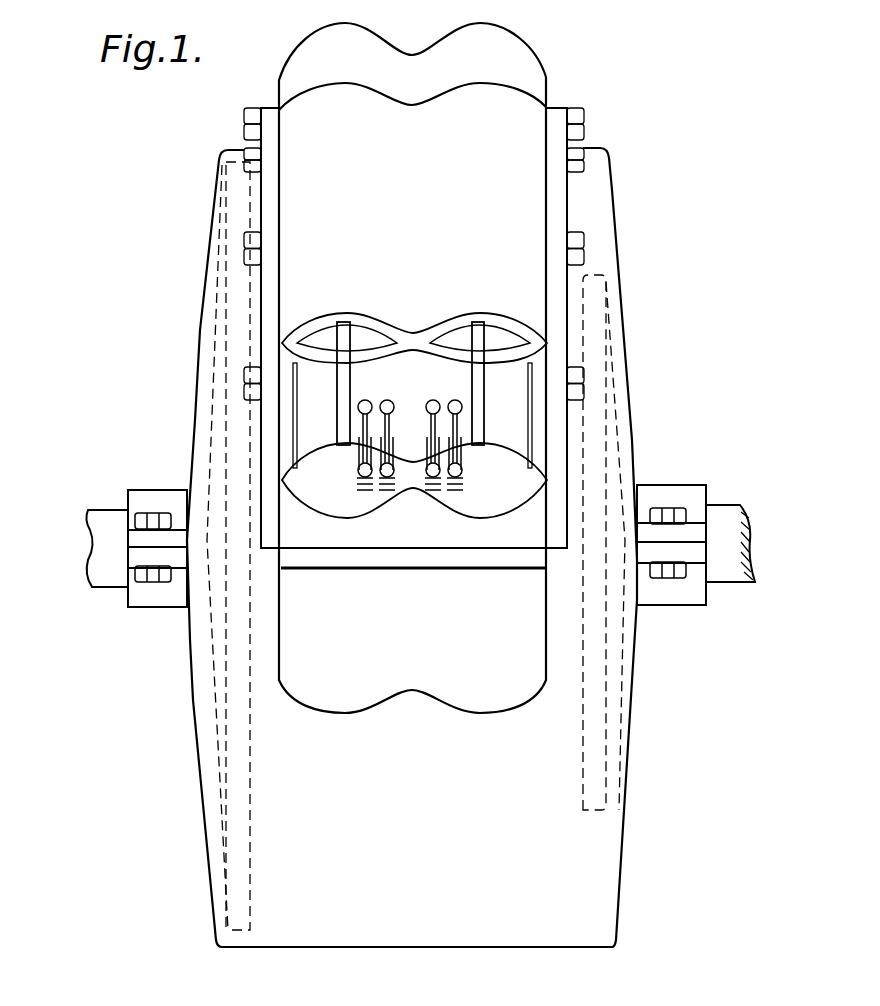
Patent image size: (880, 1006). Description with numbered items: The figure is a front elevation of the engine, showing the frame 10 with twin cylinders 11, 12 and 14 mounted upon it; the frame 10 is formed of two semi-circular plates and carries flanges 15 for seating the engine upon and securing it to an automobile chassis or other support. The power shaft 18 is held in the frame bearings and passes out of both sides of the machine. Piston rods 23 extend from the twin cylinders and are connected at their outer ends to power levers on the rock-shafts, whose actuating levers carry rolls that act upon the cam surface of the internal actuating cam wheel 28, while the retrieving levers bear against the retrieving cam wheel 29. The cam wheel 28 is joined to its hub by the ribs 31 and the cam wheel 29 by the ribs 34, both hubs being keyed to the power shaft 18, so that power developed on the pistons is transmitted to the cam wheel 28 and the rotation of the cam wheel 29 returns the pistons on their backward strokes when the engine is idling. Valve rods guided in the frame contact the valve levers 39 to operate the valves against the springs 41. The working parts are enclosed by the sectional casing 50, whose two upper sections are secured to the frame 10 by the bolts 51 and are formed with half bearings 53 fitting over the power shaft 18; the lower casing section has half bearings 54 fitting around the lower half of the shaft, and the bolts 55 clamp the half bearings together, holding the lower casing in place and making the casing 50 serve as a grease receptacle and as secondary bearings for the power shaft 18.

The frame 10 is at (417, 547).
The twin cylinder 11 is at (545, 677).
The twin cylinder 12 is at (530, 74).
The twin cylinder 14 is at (535, 216).
The flanges 15 is at (348, 568).
The power shaft 18 is at (728, 583).
The piston rods 23 is at (472, 368).
The internal actuating cam wheel 28 is at (232, 859).
The retrieving cam wheel 29 is at (600, 783).
The ribs 31 is at (210, 742).
The ribs 34 is at (622, 637).
The valve levers 39 is at (455, 399).
The springs 41 is at (367, 493).
The casing 50 is at (205, 316).
The bolts 51 is at (244, 118).
The half bearings 53 is at (140, 490).
The half bearings 54 is at (142, 595).
The bolts 55 is at (140, 515).